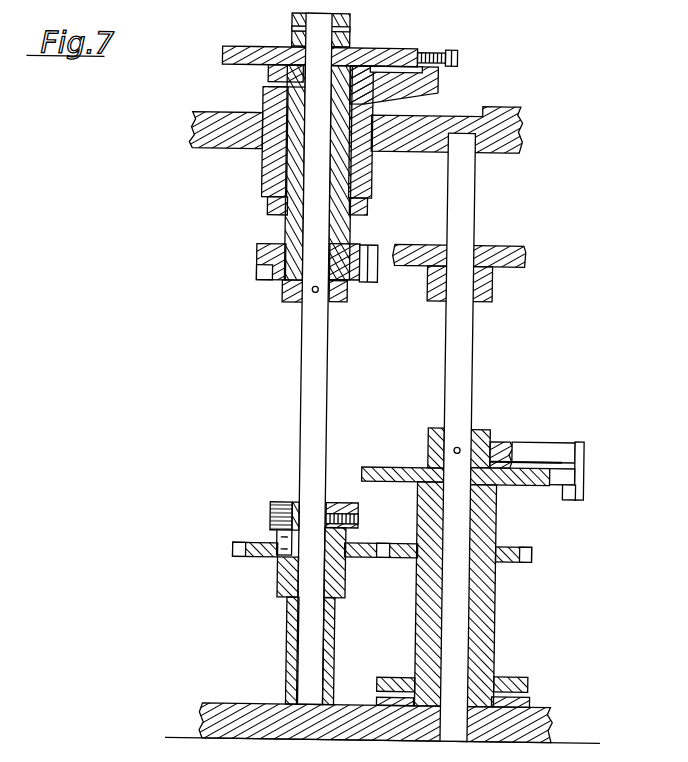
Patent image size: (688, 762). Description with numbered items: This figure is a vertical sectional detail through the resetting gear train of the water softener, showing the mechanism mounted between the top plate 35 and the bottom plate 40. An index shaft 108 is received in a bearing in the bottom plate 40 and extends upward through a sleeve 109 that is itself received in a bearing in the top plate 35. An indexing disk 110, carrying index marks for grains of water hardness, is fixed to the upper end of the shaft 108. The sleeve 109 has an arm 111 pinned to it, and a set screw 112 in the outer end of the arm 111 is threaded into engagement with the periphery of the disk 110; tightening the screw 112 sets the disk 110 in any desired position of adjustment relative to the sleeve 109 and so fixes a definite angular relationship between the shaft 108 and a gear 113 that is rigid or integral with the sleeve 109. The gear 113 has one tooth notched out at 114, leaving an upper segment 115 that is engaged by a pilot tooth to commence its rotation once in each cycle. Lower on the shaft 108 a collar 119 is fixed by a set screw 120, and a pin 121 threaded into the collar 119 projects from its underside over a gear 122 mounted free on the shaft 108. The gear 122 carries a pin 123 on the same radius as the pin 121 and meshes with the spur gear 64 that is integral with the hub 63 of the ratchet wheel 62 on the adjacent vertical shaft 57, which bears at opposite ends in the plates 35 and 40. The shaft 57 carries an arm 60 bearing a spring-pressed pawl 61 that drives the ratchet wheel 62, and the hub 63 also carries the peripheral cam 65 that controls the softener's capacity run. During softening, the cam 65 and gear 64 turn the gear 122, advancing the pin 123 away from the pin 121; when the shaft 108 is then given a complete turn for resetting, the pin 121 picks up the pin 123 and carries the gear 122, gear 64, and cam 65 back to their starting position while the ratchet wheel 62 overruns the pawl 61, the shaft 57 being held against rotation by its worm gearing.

The top plate 35 is at (432, 115).
The bottom plate 40 is at (219, 712).
The vertical shaft 57 is at (461, 187).
The arm 60 is at (530, 446).
The pawl 61 is at (569, 472).
The ratchet wheel 62 is at (378, 467).
The hub 63 is at (490, 595).
The spur gear 64 is at (512, 548).
The peripheral cam 65 is at (504, 678).
The index shaft 108 is at (301, 395).
The sleeve 109 is at (289, 169).
The indexing disk 110 is at (219, 50).
The arm 111 is at (376, 82).
The set screw 112 is at (453, 50).
The gear 113 is at (366, 281).
The notch 114 is at (256, 268).
The upper segment 115 is at (255, 250).
The collar 119 is at (272, 508).
The set screw 120 is at (360, 511).
The pin 121 is at (289, 501).
The gear 122 is at (272, 559).
The pin 123 is at (284, 548).